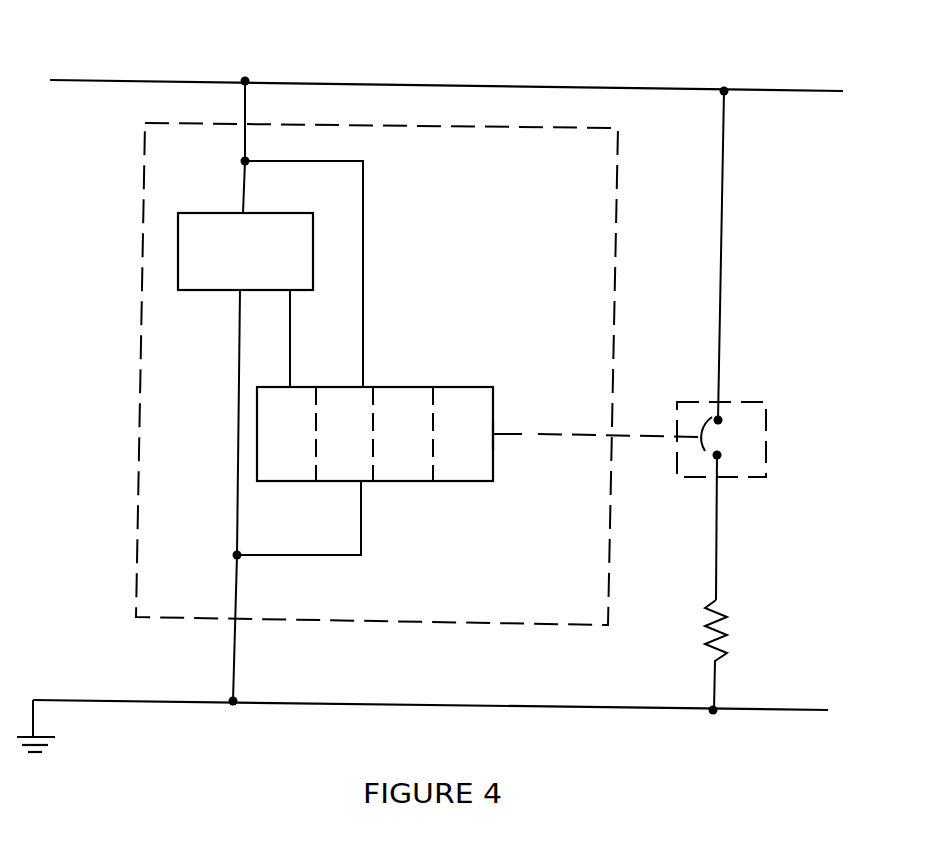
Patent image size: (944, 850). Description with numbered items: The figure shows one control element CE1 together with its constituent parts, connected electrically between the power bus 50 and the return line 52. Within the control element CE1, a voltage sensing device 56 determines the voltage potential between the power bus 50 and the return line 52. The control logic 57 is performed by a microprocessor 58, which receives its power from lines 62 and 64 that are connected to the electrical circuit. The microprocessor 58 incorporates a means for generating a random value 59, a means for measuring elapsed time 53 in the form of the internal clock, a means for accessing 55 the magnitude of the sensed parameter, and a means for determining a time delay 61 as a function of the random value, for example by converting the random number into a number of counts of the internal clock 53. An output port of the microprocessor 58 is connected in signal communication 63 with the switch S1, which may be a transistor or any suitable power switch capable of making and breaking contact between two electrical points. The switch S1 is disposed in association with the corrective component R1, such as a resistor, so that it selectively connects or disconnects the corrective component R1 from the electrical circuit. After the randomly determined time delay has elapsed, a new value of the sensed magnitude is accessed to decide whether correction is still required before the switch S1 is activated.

The power bus 50 is at (88, 80).
The return line 52 is at (110, 698).
The means for measuring elapsed time 53 is at (347, 470).
The means for accessing a magnitude of a sensed parameter 55 is at (290, 328).
The voltage sensing device 56 is at (273, 212).
The control logic 57 is at (295, 475).
The microprocessor 58 is at (493, 452).
The means for generating a random value 59 is at (390, 398).
The means for determining a time delay 61 is at (457, 405).
The power line 62 is at (363, 241).
The signal communication connection 63 is at (555, 427).
The power line 64 is at (362, 530).
The control element CE1 is at (143, 255).
The switch S1 is at (735, 402).
The corrective component R1 is at (718, 630).